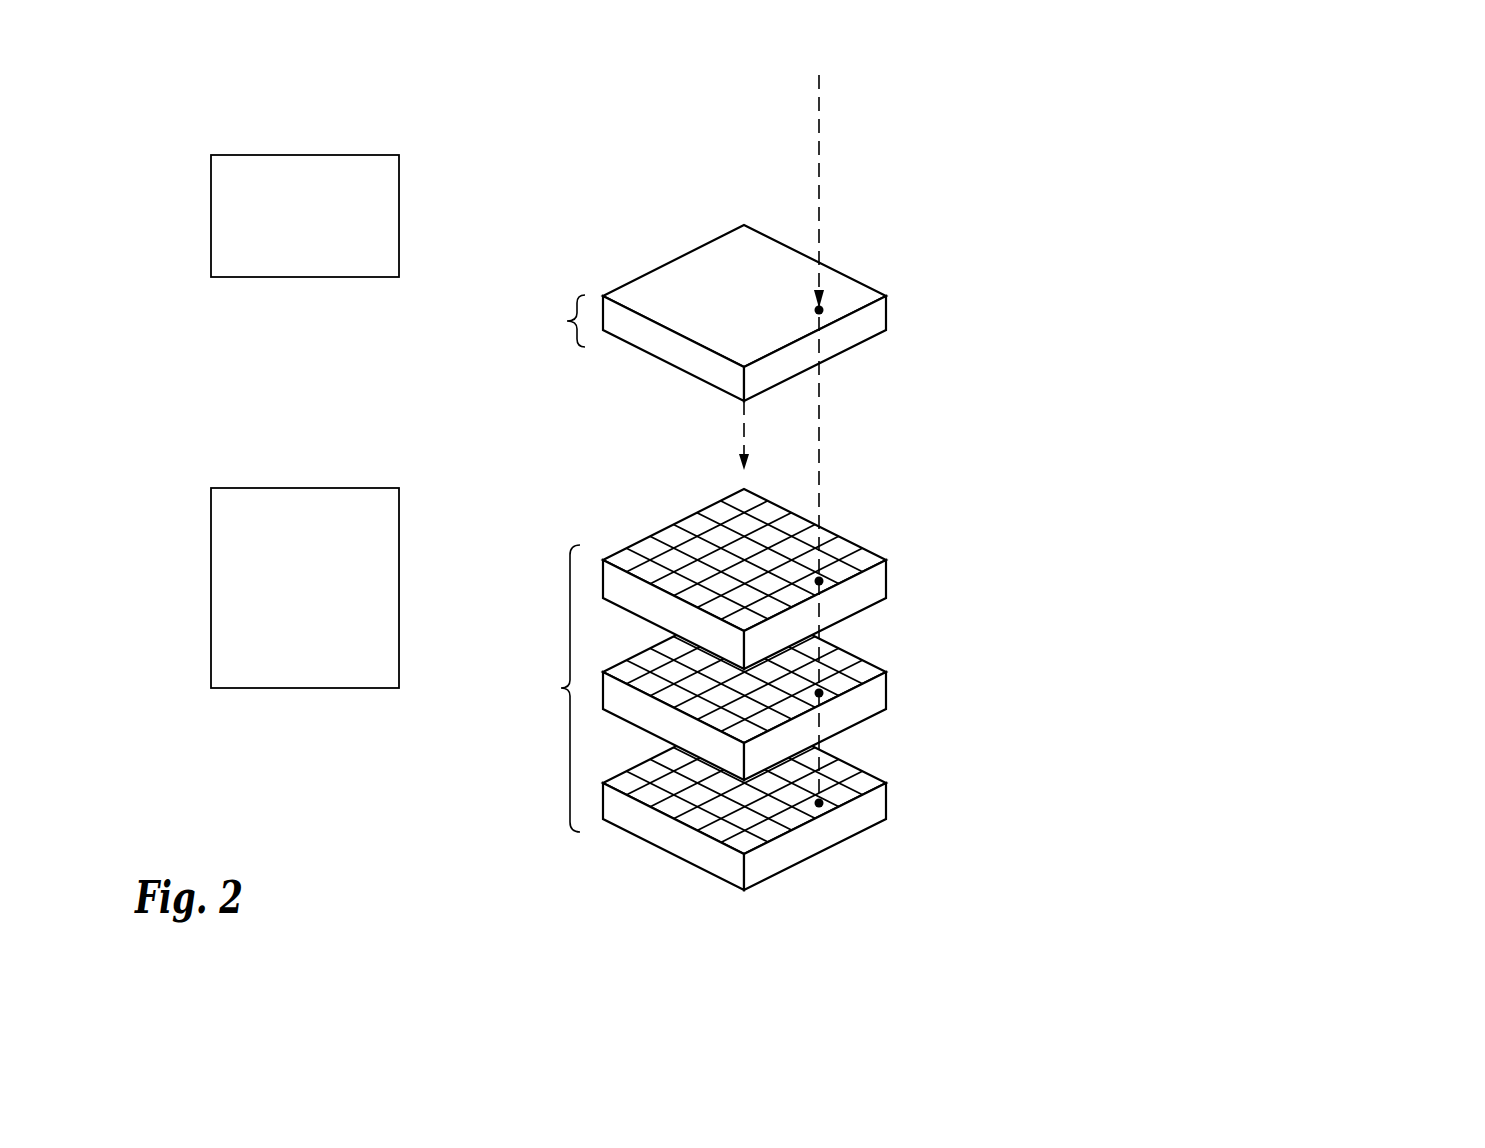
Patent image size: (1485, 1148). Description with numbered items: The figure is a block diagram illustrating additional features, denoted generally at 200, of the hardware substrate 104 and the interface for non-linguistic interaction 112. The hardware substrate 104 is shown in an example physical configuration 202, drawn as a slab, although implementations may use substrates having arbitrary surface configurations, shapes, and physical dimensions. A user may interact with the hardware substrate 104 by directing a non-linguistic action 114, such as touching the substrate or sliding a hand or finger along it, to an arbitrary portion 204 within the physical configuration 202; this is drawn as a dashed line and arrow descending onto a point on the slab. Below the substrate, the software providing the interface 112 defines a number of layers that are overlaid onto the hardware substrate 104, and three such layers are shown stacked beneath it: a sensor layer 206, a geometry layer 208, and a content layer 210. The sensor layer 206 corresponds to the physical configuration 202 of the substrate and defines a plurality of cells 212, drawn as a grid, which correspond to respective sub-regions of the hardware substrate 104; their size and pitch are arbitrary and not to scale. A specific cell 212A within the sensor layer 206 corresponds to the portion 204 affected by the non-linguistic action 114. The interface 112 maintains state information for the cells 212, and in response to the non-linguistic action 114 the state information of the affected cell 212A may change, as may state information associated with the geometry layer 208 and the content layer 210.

The hardware substrate 104 is at (562, 317).
The interface for non-linguistic interaction 112 is at (560, 687).
The non-linguistic action 114 is at (834, 175).
The additional features 200 is at (1409, 96).
The physical configuration 202 is at (727, 306).
The portion 204 is at (819, 310).
The sensor layer 206 is at (908, 545).
The geometry layer 208 is at (902, 703).
The content layer 210 is at (902, 783).
The cells 212 is at (715, 520).
The specific cell 212A is at (819, 581).